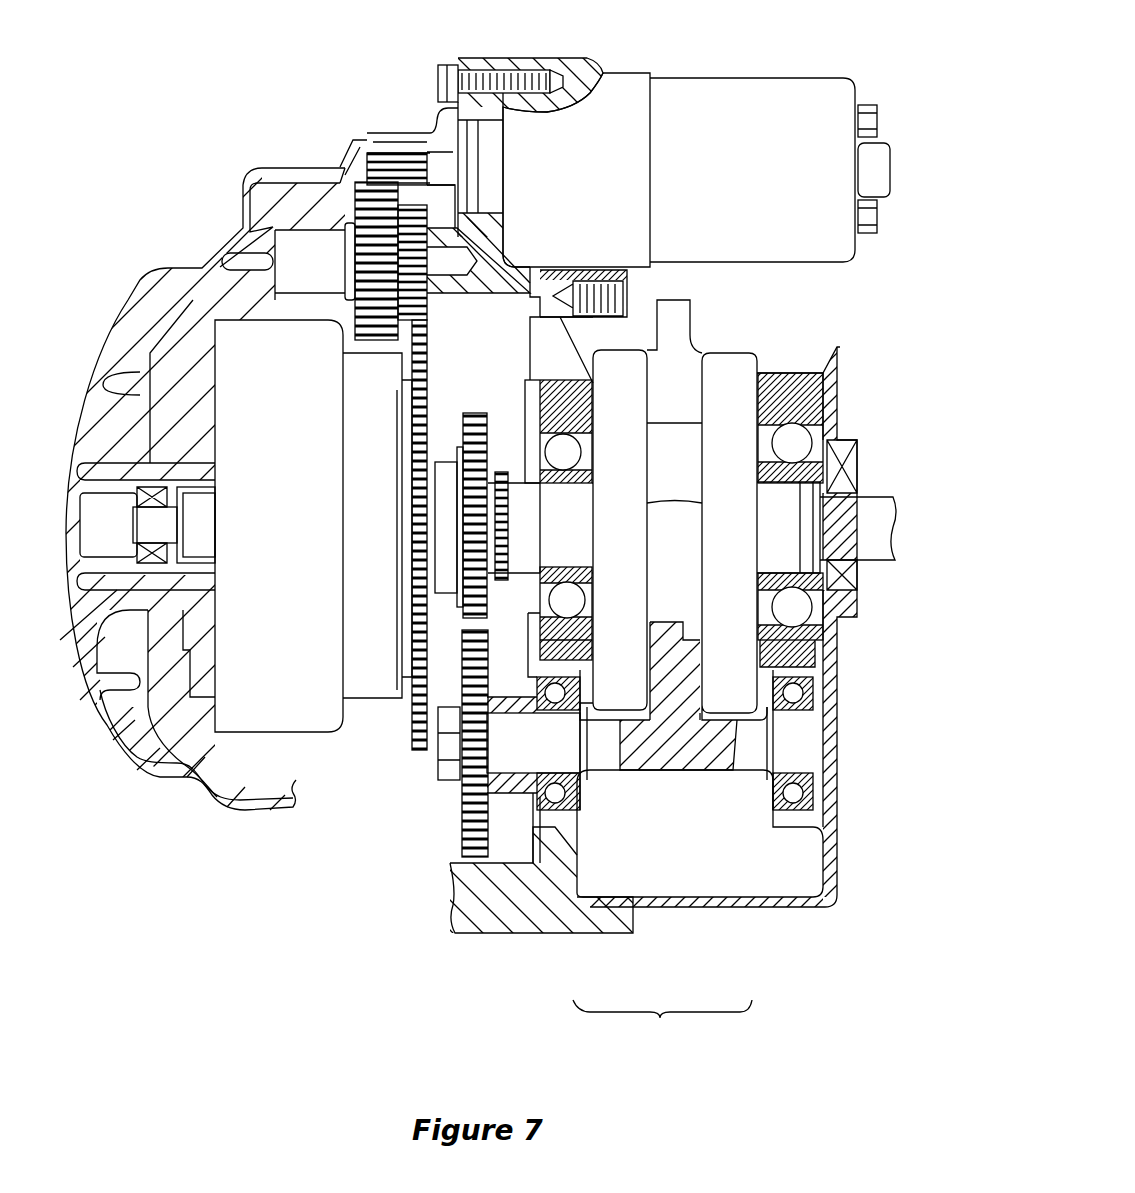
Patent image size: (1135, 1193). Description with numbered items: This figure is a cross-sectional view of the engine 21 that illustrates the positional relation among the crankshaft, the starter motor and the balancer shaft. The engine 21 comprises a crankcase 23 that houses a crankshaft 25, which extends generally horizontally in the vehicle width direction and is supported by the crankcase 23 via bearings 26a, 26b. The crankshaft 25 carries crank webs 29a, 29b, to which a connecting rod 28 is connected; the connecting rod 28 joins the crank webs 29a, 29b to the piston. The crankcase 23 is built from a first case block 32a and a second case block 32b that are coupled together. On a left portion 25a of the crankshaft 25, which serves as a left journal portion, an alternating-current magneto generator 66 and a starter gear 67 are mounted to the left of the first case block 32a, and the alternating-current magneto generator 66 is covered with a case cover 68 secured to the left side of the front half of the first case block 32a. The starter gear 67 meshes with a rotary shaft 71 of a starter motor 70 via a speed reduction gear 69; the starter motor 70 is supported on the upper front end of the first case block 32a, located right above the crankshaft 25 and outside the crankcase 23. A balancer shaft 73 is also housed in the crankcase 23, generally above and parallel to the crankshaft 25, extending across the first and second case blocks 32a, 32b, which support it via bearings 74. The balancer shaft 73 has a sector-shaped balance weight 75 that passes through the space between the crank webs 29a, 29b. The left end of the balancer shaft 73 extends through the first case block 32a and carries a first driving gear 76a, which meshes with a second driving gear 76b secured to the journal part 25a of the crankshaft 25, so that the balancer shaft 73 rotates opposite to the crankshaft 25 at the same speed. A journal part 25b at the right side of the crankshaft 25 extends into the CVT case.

The engine 21 is at (412, 933).
The crankcase 23 is at (662, 1027).
The crankshaft 25 is at (787, 513).
The left portion of the crankshaft 25a is at (525, 557).
The journal part at the right side of the crankshaft 25b is at (882, 527).
The bearing 26a is at (553, 440).
The bearing 26b is at (813, 403).
The connecting rod 28 is at (688, 333).
The crank web 29a is at (618, 393).
The crank web 29b is at (733, 360).
The first case block 32a is at (600, 920).
The second case block 32b is at (718, 905).
The alternating-current magneto generator 66 is at (277, 703).
The starter gear 67 is at (408, 760).
The case cover 68 is at (130, 300).
The speed reduction gear 69 is at (367, 210).
The starter motor 70 is at (752, 97).
The rotary shaft 71 is at (390, 153).
The balancer shaft 73 is at (720, 757).
The bearings 74 is at (562, 795).
The balance weight 75 is at (670, 630).
The first driving gear 76a is at (460, 823).
The second driving gear 76b is at (472, 508).